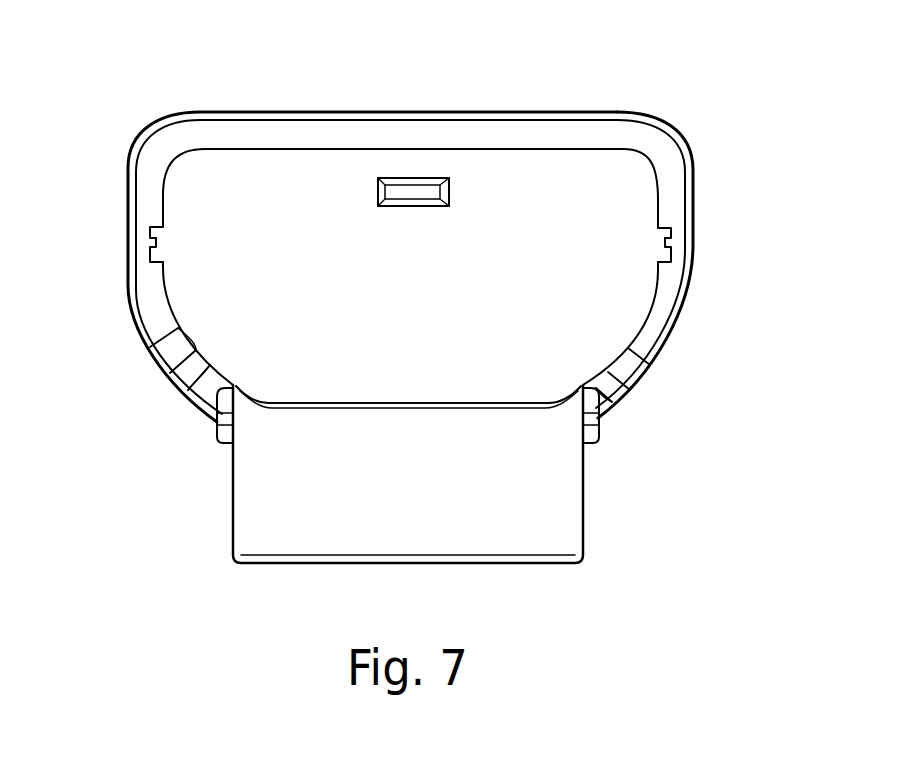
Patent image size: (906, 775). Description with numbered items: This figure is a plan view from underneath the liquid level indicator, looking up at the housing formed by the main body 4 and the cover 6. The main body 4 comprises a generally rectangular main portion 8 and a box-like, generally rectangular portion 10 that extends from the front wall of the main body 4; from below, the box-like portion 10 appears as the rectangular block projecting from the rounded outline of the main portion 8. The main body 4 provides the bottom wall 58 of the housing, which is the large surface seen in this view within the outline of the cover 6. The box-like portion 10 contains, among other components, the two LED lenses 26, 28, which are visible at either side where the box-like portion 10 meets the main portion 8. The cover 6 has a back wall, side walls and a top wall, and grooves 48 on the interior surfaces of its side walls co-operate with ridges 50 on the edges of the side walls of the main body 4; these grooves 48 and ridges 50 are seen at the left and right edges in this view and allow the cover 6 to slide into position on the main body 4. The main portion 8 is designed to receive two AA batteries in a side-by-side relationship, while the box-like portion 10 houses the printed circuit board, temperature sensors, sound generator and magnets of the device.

The main body 4 is at (582, 290).
The cover 6 is at (597, 112).
The main portion 8 is at (197, 322).
The box-like portion 10 is at (241, 508).
The LED lens 26 is at (218, 430).
The LED lens 28 is at (600, 430).
The grooves 48 is at (160, 228).
The ridges 50 is at (154, 239).
The bottom wall 58 is at (630, 190).